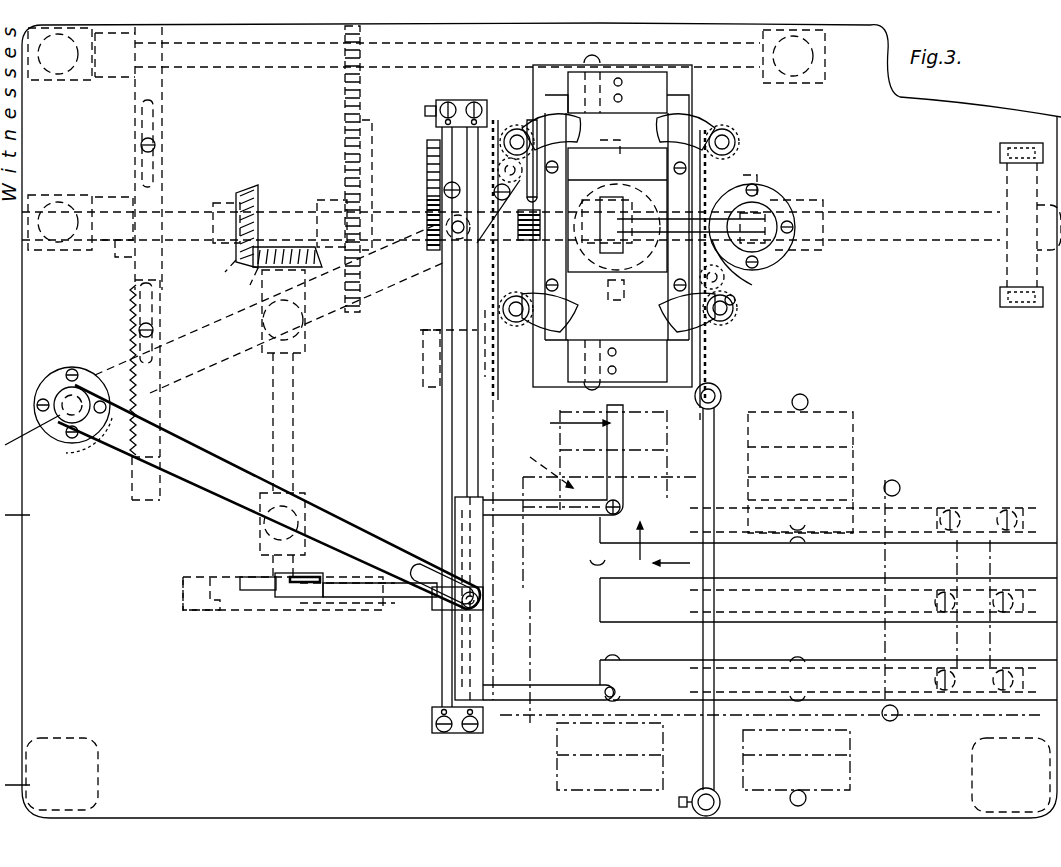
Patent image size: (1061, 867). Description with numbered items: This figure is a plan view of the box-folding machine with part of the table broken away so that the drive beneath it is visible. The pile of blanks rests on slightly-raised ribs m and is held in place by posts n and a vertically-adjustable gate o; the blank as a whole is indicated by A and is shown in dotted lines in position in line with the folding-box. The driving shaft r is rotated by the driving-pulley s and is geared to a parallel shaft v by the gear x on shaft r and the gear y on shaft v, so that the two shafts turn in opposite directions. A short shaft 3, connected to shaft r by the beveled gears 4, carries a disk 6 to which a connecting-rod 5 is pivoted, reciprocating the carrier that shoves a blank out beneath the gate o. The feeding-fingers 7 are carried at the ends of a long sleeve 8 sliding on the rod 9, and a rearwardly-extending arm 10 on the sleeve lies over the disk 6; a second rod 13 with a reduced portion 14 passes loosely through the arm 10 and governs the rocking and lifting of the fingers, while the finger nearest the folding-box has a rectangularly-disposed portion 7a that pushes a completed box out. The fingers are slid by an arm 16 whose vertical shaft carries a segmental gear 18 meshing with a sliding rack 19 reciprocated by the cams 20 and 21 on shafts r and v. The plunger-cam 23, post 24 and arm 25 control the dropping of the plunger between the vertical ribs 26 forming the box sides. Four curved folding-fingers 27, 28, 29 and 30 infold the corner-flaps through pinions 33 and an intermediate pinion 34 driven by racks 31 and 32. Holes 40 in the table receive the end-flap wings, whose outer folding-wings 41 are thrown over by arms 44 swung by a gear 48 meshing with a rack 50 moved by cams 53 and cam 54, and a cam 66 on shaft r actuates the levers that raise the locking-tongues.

The short shaft 3 is at (295, 412).
The beveled gears 4 is at (232, 266).
The connecting-rod 5 is at (240, 608).
The disk 6 is at (208, 578).
The feeding-fingers 7 is at (650, 150).
The rectangularly-disposed portion 7a is at (560, 412).
The sleeve 8 is at (452, 508).
The rod 9 is at (466, 462).
The arm 10 is at (340, 598).
The second rod 13 is at (440, 440).
The reduced portion 14 is at (436, 612).
The arm 16 is at (193, 360).
The segmental gear 18 is at (64, 455).
The sliding rack 19 is at (132, 494).
The cam 20 is at (118, 238).
The cam 21 is at (128, 52).
The plunger-cam 23 is at (775, 180).
The post 24 is at (773, 243).
The arm 25 is at (745, 298).
The vertical ribs 26 is at (560, 158).
The curved folding-finger 27 is at (520, 128).
The curved folding-finger 28 is at (522, 330).
The curved folding-finger 29 is at (738, 312).
The curved folding-finger 30 is at (712, 126).
The rack 31 is at (492, 402).
The rack 32 is at (704, 372).
The pinion 33 is at (508, 122).
The intermediate pinion 34 is at (490, 162).
The holes 40 is at (683, 92).
The folding-wing 41 is at (617, 227).
The arms 44 is at (533, 268).
The gear 48 is at (490, 257).
The rack 50 is at (430, 362).
The cams 53 is at (395, 250).
The cam 54 is at (425, 104).
The cam 66 is at (628, 292).
The blank A is at (893, 402).
The ribs m is at (908, 578).
The posts n is at (808, 398).
The gate o is at (712, 430).
The shaft r is at (175, 212).
The driving-pulley s is at (1010, 262).
The shaft v is at (245, 60).
The gear x is at (345, 170).
The gear y is at (345, 106).